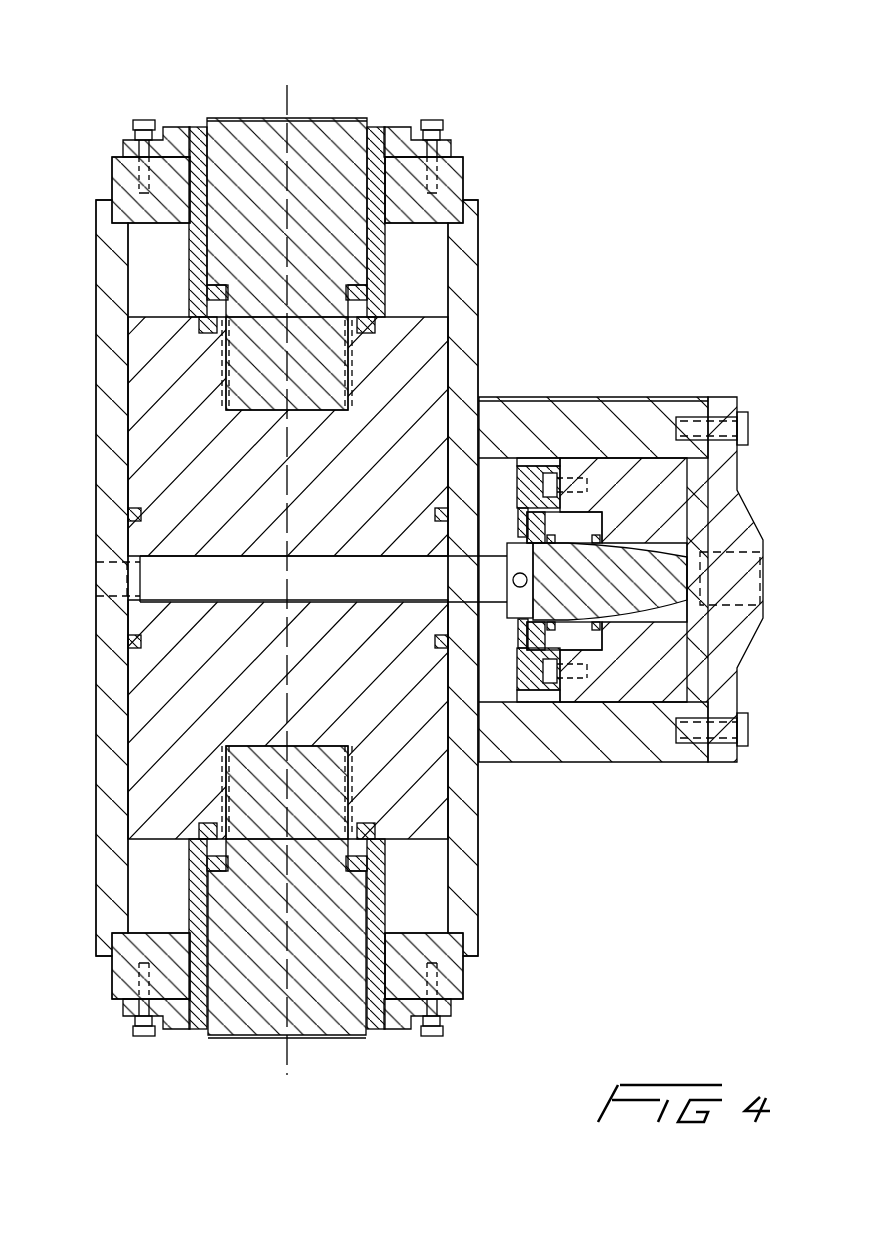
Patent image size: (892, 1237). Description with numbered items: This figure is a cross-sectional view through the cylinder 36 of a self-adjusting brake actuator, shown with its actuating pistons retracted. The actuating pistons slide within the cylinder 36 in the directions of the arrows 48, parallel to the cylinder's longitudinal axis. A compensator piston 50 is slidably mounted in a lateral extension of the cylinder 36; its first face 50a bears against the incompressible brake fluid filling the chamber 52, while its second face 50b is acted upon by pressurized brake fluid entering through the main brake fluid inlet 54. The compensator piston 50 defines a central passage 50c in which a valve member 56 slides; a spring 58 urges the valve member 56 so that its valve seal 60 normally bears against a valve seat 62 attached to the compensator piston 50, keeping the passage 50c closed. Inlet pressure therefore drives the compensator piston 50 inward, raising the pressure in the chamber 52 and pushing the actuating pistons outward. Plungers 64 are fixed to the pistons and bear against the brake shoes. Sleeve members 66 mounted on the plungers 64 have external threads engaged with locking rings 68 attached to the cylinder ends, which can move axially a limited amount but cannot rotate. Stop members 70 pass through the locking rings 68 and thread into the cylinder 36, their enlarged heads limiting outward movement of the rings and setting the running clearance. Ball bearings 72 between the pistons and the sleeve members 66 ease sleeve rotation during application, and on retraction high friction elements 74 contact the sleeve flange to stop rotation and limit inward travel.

The cylinder 36 is at (470, 275).
The arrows 48 is at (288, 74).
The compensator piston 50 is at (673, 492).
The first face 50a is at (517, 497).
The second face 50b is at (688, 515).
The central passage 50c is at (667, 620).
The chamber 52 is at (371, 594).
The main brake fluid inlet 54 is at (748, 583).
The valve member 56 is at (535, 605).
The spring 58 is at (587, 540).
The valve seal 60 is at (520, 642).
The valve seat 62 is at (520, 530).
The plungers 64 is at (348, 118).
The sleeve members 66 is at (197, 127).
The locking rings 68 is at (398, 130).
The stop members 70 is at (140, 135).
The ball bearings 72 is at (205, 322).
The high friction elements 74 is at (207, 288).